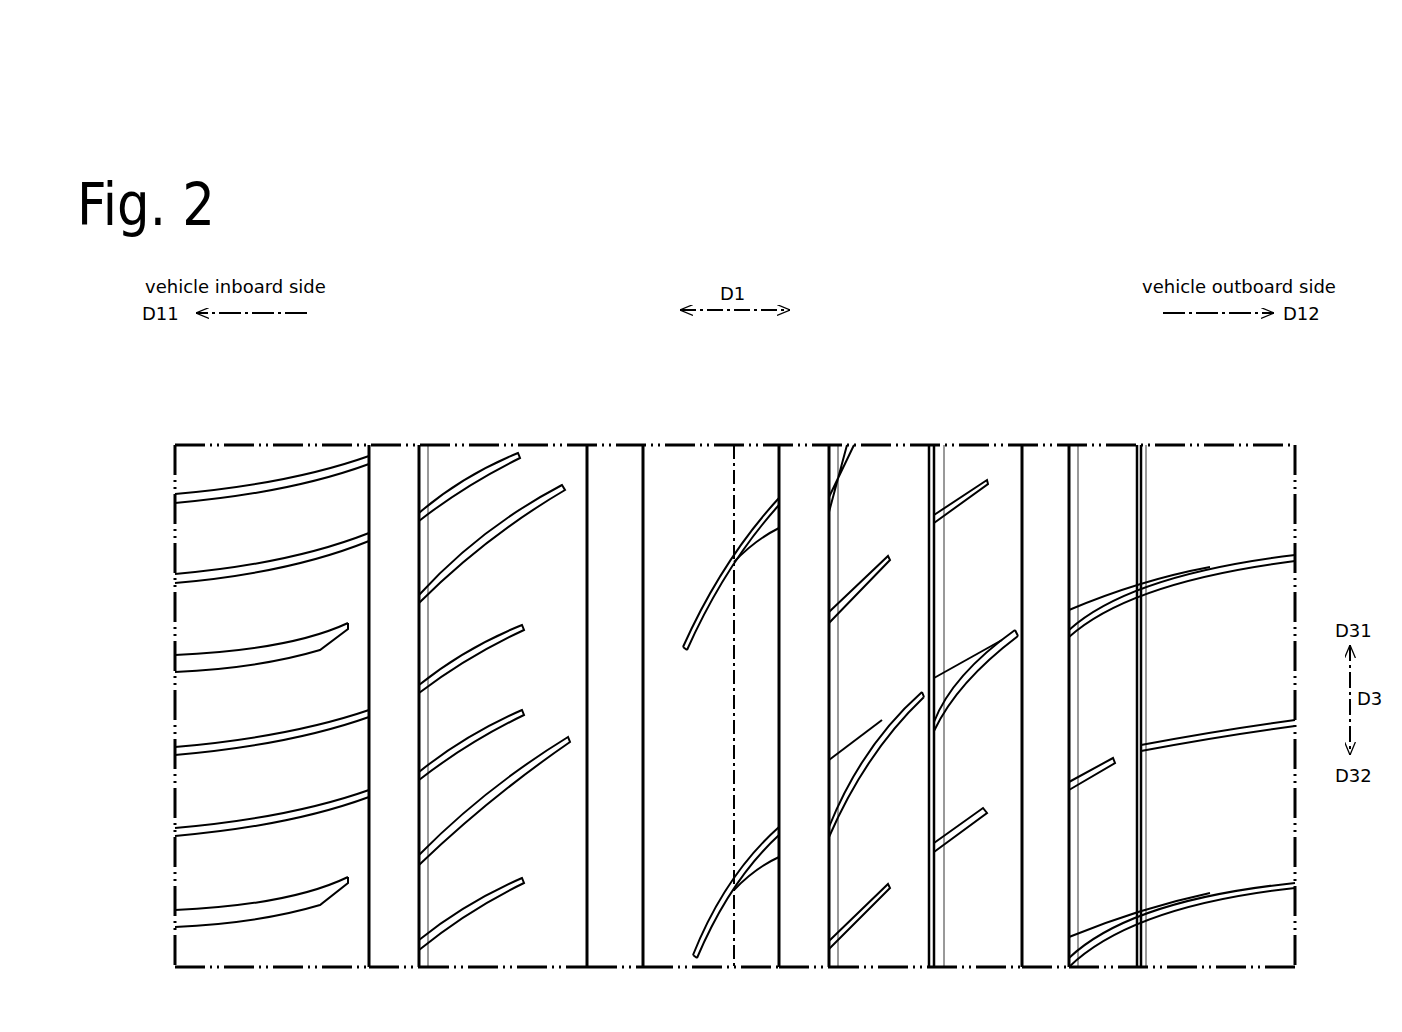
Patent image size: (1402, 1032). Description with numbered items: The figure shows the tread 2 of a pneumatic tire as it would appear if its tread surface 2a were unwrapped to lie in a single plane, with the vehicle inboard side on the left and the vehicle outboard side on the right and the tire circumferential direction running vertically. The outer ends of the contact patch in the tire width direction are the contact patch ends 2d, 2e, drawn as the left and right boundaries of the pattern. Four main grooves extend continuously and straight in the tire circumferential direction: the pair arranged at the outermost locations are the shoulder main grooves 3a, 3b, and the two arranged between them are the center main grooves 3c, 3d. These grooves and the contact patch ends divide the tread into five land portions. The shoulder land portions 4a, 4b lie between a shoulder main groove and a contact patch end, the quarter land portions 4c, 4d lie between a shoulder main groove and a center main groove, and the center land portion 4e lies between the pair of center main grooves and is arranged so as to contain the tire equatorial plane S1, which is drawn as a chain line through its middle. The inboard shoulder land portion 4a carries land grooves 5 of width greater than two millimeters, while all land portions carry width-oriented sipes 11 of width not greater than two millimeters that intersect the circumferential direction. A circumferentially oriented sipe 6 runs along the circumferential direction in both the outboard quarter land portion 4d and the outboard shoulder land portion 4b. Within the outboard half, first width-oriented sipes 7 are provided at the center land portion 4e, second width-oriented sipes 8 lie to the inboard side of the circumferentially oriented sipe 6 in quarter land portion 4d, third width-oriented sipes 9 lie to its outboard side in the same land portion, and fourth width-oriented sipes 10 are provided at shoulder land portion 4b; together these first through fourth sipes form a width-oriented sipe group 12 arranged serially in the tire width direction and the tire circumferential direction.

The tread 2 is at (1272, 462).
The tread surface 2a is at (1272, 516).
The contact patch end 2d is at (172, 878).
The contact patch end 2e is at (1298, 915).
The shoulder main groove 3a is at (398, 445).
The shoulder main groove 3b is at (1052, 445).
The center main groove 3c is at (614, 445).
The center main groove 3d is at (803, 445).
The shoulder land portion 4a is at (268, 445).
The shoulder land portion 4b is at (1178, 445).
The quarter land portion 4c is at (497, 445).
The quarter land portion 4d is at (908, 445).
The center land portion 4e is at (722, 445).
The land groove 5 is at (213, 674).
The circumferentially oriented sipe 6 is at (1143, 835).
The first width-oriented sipe 7 is at (716, 909).
The second width-oriented sipe 8 is at (881, 712).
The third width-oriented sipe 9 is at (994, 639).
The fourth width-oriented sipe 10 is at (1108, 590).
The width-oriented sipe 11 is at (512, 544).
The width-oriented sipe group 12 is at (912, 665).
The tire equatorial plane S1 is at (732, 462).